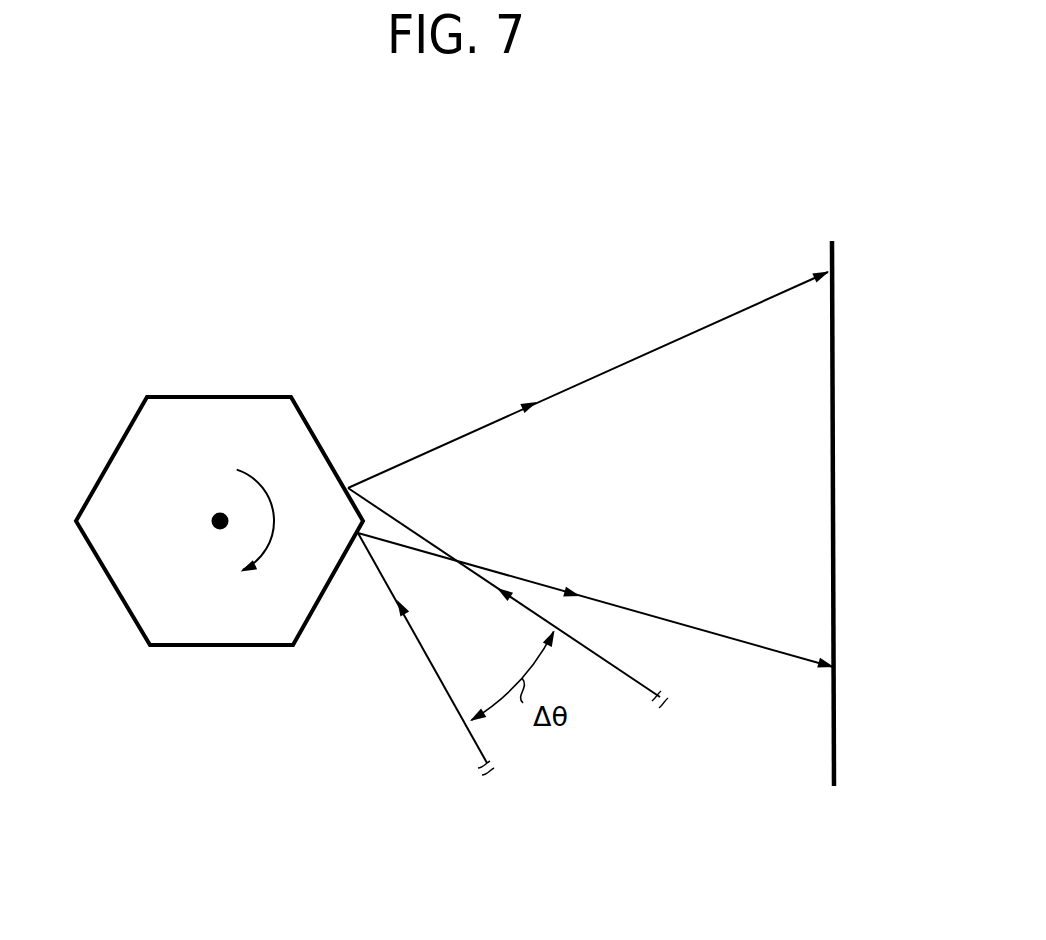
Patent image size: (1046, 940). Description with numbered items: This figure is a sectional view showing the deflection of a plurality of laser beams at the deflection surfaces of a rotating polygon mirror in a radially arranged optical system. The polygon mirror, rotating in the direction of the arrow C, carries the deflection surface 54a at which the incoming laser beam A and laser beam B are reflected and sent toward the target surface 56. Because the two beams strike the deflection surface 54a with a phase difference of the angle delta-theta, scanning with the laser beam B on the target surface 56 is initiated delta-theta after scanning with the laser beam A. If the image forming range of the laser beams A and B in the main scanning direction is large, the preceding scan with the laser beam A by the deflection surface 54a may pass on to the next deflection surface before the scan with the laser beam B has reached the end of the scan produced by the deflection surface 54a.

The deflection surface 54a is at (323, 443).
The scanned surface / photosensitive drum 56 is at (835, 250).
The laser beam A is at (740, 310).
The laser beam B is at (412, 637).
The rotation direction of polygon mirror C is at (260, 478).